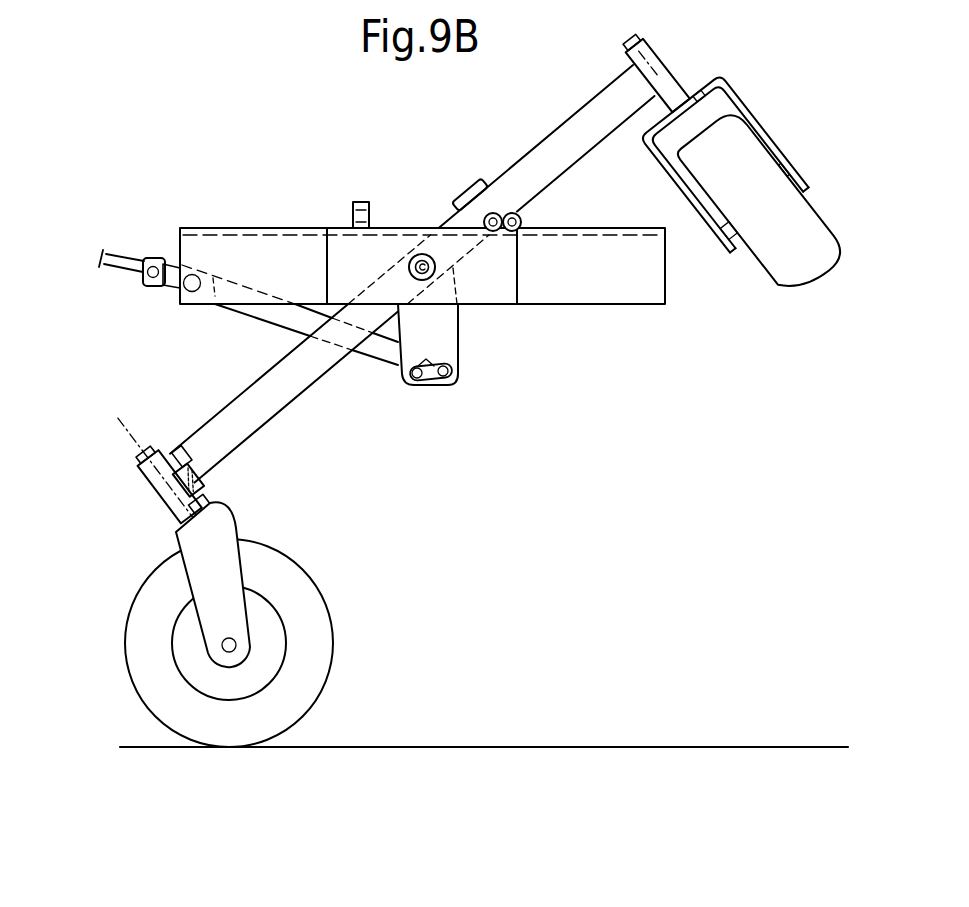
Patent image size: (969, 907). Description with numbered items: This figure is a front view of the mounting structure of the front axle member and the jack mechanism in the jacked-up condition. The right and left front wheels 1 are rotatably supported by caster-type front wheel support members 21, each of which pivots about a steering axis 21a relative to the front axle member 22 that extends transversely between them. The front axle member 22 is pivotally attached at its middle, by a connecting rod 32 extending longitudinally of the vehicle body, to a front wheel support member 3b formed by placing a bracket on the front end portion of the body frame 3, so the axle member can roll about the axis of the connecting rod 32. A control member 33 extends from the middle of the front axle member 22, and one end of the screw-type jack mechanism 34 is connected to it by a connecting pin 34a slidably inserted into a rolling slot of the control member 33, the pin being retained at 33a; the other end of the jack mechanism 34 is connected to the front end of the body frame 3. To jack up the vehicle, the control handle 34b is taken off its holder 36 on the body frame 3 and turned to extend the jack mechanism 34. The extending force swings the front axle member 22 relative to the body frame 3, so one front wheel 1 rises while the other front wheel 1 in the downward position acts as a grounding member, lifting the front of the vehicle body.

The front wheel 1 is at (312, 690).
The front wheel support member 21 is at (197, 575).
The steering axis 21a is at (122, 420).
The front axle member 22 is at (325, 372).
The body frame 3 is at (628, 290).
The front wheel support member 3b is at (508, 271).
The connecting rod 32 is at (437, 267).
The control member 33 is at (413, 385).
The bolt 33a is at (437, 373).
The jack mechanism 34 is at (266, 319).
The connecting pin 34a is at (460, 370).
The control handle 34b is at (140, 256).
The holder 36 is at (361, 202).